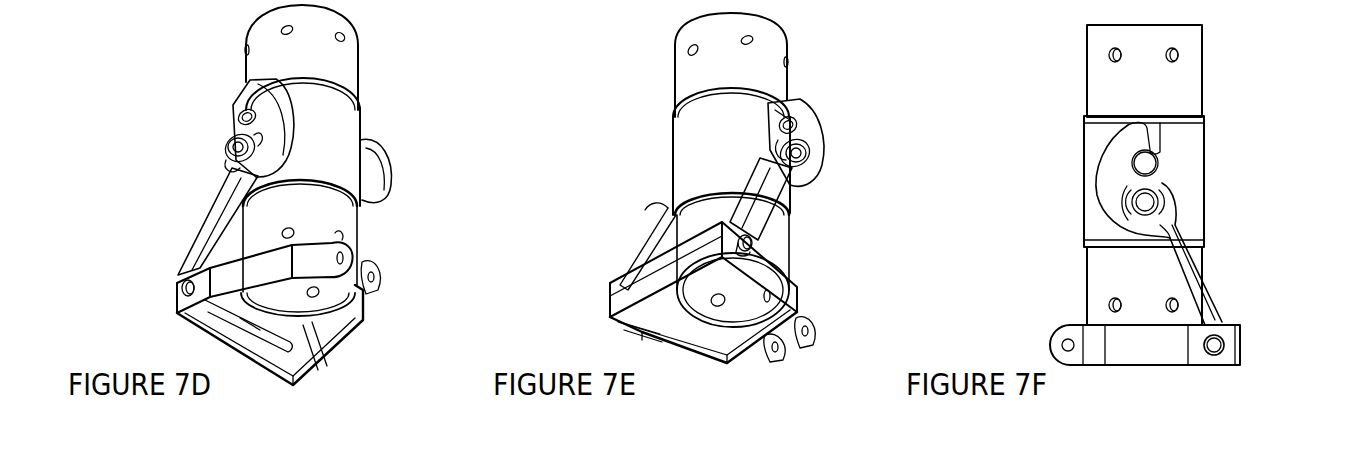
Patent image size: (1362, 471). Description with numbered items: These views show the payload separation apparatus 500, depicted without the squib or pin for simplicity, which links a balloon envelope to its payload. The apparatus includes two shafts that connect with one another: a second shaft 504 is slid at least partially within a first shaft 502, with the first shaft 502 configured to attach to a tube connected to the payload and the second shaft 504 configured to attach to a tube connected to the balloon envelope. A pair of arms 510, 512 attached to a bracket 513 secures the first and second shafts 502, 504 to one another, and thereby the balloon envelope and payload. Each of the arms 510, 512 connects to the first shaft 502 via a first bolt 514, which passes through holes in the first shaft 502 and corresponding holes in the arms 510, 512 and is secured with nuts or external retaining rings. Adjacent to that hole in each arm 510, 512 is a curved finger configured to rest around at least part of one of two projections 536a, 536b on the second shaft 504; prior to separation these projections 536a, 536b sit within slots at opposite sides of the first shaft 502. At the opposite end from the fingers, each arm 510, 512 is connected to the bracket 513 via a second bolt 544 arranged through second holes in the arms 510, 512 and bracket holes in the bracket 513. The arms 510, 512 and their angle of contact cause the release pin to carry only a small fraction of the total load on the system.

In FIG. 7D, the payload separation apparatus 500 is at (275, 195).
In FIG. 7E, the payload separation apparatus 500 is at (705, 188).
In FIG. 7F, the payload separation apparatus 500 is at (1127, 195).
In FIG. 7D, the first shaft 502 is at (362, 115).
In FIG. 7E, the first shaft 502 is at (670, 150).
In FIG. 7F, the first shaft 502 is at (1082, 213).
In FIG. 7D, the second shaft 504 is at (243, 62).
In FIG. 7E, the second shaft 504 is at (673, 82).
In FIG. 7F, the second shaft 504 is at (1087, 72).
In FIG. 7D, the arm 510 is at (395, 165).
In FIG. 7F, the arm 510 is at (1205, 290).
In FIG. 7D, the arm 512 is at (215, 200).
In FIG. 7E, the arm 512 is at (645, 235).
In FIG. 7F, the arm 512 is at (1191, 254).
In FIG. 7D, the bracket 513 is at (175, 297).
In FIG. 7E, the bracket 513 is at (605, 297).
In FIG. 7F, the bracket 513 is at (1058, 325).
In FIG. 7D, the first bolt 514 is at (230, 140).
In FIG. 7E, the first bolt 514 is at (803, 148).
In FIG. 7F, the first bolt 514 is at (1133, 187).
In FIG. 7F, the projection 536a is at (1132, 152).
In FIG. 7D, the projection 536b is at (238, 110).
In FIG. 7E, the projection 536b is at (770, 128).
In FIG. 7D, the second bolt 544 is at (185, 282).
In FIG. 7E, the second bolt 544 is at (765, 215).
In FIG. 7F, the second bolt 544 is at (1212, 330).